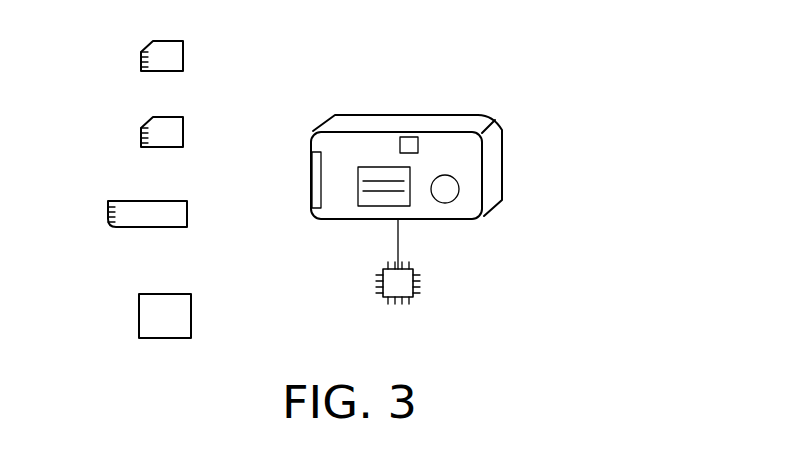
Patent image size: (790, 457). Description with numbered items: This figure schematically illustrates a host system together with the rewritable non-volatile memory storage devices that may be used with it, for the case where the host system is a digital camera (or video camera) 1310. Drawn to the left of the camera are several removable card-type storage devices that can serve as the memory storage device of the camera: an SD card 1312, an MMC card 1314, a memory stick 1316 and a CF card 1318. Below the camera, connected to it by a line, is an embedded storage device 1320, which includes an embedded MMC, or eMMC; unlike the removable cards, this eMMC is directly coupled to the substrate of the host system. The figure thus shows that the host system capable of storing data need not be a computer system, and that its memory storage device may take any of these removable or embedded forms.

The digital camera 1310 is at (502, 153).
The SD card 1312 is at (183, 50).
The MMC card 1314 is at (183, 126).
The memory stick 1316 is at (187, 215).
The CF card 1318 is at (191, 310).
The embedded storage device 1320 is at (418, 286).